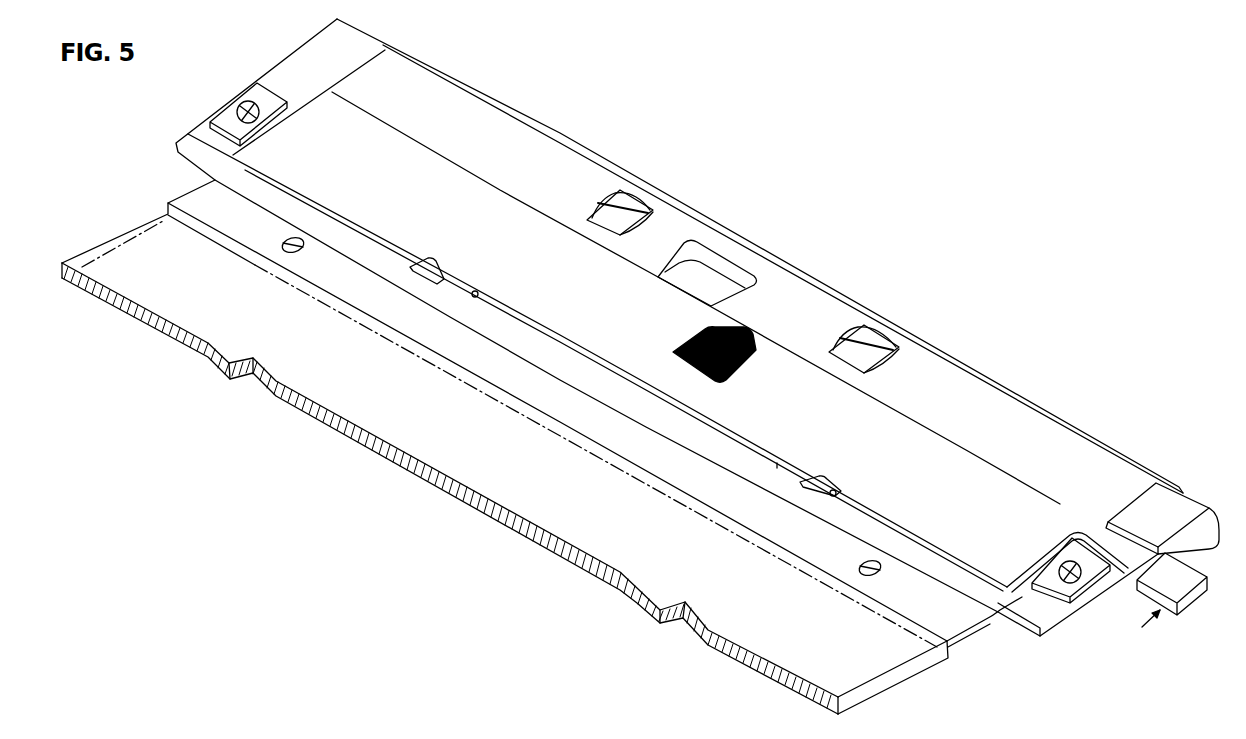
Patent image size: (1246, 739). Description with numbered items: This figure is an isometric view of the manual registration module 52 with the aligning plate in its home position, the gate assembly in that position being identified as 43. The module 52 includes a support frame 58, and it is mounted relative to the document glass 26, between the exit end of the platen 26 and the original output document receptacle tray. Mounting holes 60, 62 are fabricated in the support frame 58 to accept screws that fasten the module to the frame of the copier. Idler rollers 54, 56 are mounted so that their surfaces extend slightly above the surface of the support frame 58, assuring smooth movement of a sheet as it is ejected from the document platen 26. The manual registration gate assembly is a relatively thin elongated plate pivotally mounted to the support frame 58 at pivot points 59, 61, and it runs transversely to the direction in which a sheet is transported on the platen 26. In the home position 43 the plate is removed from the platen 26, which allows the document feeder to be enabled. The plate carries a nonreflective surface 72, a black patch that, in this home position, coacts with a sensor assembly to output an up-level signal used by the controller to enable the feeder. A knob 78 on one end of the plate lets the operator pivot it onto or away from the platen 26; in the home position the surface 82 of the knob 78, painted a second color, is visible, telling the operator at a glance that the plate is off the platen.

The document glass 26 is at (407, 438).
The manual registration gate assembly in home position 43 is at (433, 167).
The registration module 52 is at (843, 278).
The idler roller 54 is at (868, 345).
The idler roller 56 is at (622, 193).
The support frame 58 is at (1026, 422).
The pivot point 59 is at (820, 478).
The mounting hole 60 is at (860, 565).
The pivot point 61 is at (447, 275).
The mounting hole 62 is at (295, 250).
The nonreflective surface 72 is at (744, 333).
The knob 78 is at (1140, 625).
The surface 82 is at (1180, 575).